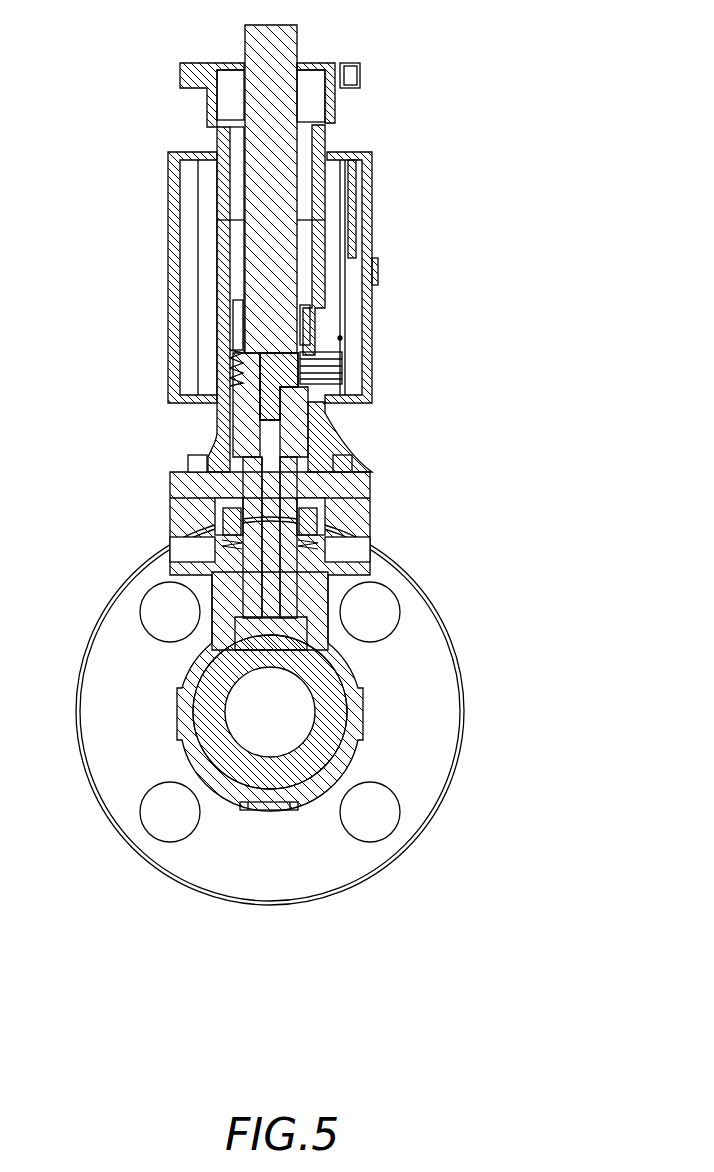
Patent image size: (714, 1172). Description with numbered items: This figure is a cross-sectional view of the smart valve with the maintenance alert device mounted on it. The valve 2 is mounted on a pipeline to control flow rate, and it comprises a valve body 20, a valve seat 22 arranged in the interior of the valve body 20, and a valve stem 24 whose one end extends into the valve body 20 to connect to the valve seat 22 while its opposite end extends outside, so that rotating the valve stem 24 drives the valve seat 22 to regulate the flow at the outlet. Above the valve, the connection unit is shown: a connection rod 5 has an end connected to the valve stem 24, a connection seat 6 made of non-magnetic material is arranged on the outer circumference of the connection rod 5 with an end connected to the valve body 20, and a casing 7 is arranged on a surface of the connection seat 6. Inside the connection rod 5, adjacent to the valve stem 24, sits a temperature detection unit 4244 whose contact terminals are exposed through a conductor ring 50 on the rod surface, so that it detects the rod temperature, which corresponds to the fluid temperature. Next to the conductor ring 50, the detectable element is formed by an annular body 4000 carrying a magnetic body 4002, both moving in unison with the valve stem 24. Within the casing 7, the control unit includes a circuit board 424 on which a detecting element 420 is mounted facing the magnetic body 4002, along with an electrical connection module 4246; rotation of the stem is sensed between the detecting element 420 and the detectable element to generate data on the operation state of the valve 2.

The valve 2 is at (474, 678).
The valve body 20 is at (197, 668).
The valve seat 22 is at (242, 775).
The valve stem 24 is at (250, 475).
The connection rod 5 is at (250, 132).
The connection seat 6 is at (180, 68).
The casing 7 is at (173, 262).
The annular body 4000 is at (237, 328).
The conductor ring 50 is at (233, 360).
The circuit board 424 is at (340, 292).
The magnetic body 4002 is at (307, 328).
The detecting element 420 is at (341, 339).
The electrical connection module 4246 is at (337, 378).
The temperature detection unit 4244 is at (350, 437).